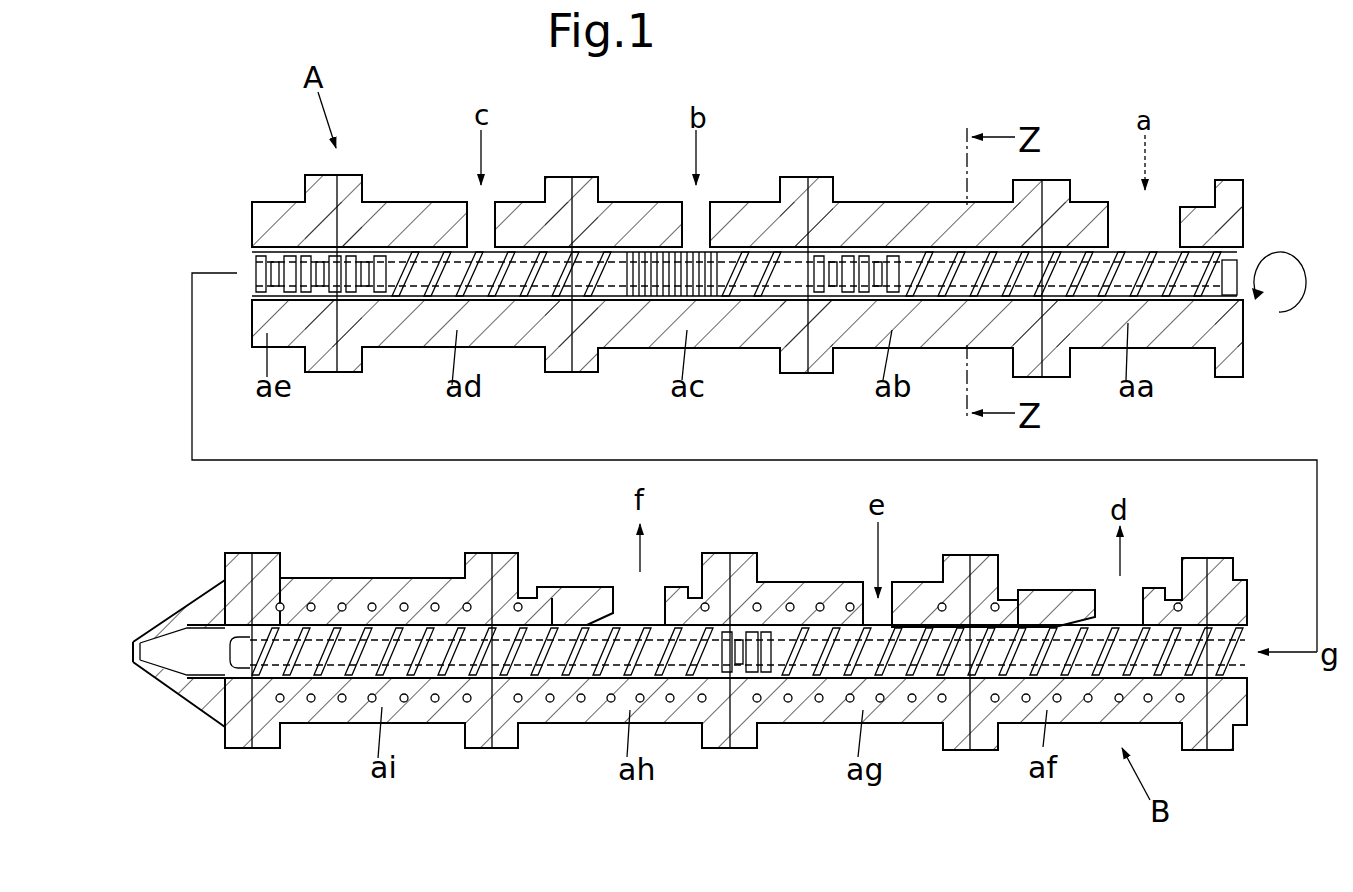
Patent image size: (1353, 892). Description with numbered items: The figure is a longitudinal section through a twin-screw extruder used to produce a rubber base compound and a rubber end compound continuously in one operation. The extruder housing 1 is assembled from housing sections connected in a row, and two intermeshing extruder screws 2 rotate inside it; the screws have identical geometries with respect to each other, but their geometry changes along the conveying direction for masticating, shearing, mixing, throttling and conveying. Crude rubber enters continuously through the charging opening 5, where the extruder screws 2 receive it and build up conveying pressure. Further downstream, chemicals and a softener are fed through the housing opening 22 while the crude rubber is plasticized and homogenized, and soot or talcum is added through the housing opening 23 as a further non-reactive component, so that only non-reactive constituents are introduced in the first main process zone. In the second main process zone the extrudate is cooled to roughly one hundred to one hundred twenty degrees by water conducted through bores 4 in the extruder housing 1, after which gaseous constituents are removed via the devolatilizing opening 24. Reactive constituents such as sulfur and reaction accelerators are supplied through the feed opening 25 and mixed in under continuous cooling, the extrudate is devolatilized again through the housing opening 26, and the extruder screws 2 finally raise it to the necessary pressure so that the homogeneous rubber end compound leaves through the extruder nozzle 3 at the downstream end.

The extruder housing 1 is at (1243, 353).
The extruder screws 2 is at (1245, 250).
The extruder nozzle 3 is at (212, 698).
The bores 4 is at (373, 605).
The charging opening 5 is at (1157, 237).
The housing opening 22 is at (695, 215).
The housing opening 23 is at (483, 215).
The devolatilizing opening 24 is at (1123, 610).
The feed opening 25 is at (878, 597).
The housing opening 26 is at (630, 605).